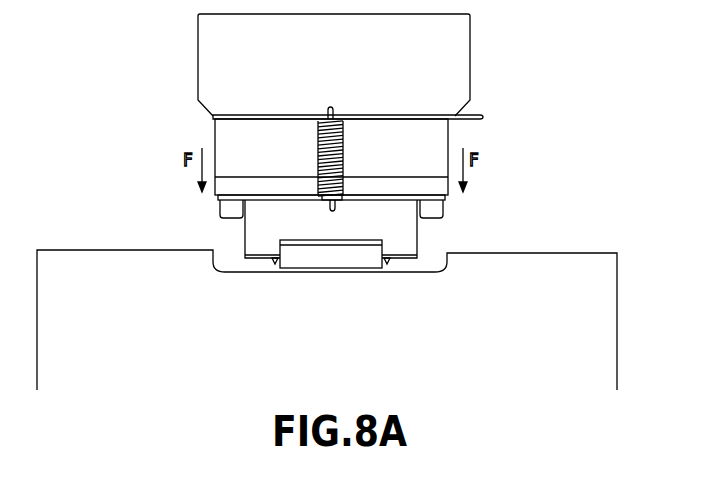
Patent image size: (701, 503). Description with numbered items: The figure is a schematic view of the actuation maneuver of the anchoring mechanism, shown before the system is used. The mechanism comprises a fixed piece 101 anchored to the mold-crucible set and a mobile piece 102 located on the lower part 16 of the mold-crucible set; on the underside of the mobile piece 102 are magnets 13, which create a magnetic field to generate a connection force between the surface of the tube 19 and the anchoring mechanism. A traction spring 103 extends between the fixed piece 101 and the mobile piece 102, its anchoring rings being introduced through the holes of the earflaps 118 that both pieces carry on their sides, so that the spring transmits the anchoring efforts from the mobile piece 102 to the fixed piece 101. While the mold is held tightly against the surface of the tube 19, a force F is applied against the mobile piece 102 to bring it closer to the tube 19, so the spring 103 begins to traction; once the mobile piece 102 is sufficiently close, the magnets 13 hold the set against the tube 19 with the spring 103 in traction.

The fixed piece 101 is at (482, 116).
The mobile piece 102 is at (436, 201).
The traction spring 103 is at (318, 143).
The earflap 118 is at (327, 117).
The magnet 13 is at (228, 210).
The lower part 16 is at (258, 240).
The tube 19 is at (568, 300).